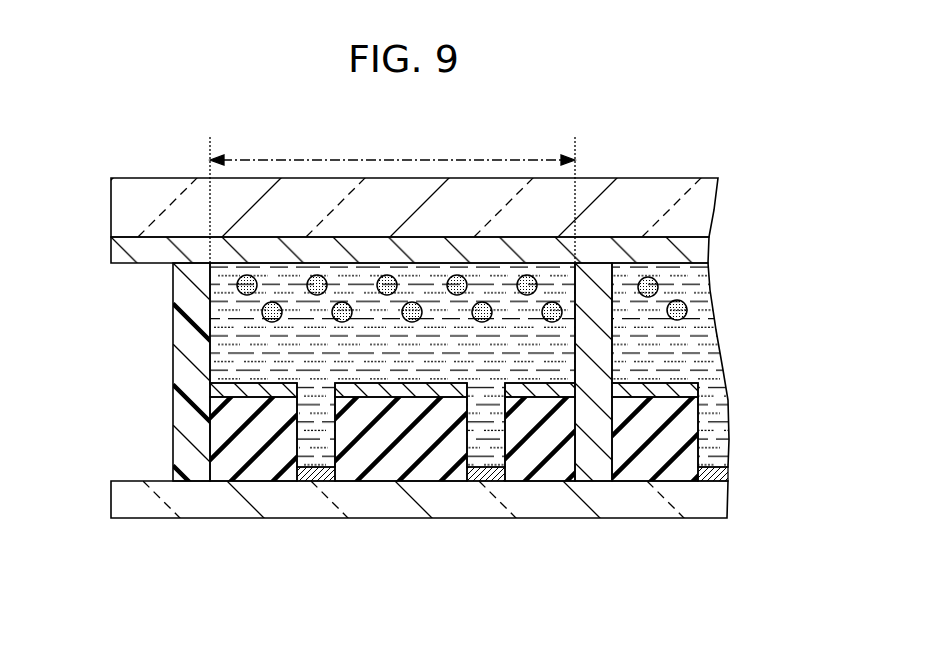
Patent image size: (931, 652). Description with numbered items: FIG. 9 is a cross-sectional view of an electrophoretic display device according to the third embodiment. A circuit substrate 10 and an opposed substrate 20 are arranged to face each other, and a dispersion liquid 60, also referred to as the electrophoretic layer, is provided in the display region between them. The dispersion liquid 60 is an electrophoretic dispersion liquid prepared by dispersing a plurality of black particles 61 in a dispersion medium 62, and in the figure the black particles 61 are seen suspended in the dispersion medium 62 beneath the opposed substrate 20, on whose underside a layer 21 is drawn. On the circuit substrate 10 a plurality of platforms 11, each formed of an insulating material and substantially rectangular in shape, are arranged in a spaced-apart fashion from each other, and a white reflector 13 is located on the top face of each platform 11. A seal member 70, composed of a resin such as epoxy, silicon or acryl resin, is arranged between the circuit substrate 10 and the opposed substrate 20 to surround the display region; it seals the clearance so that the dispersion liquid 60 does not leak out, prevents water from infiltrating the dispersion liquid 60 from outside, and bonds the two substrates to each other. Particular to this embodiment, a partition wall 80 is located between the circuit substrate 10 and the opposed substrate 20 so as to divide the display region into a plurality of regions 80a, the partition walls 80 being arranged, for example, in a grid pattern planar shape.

The circuit substrate 10 is at (123, 502).
The platform 11 is at (218, 438).
The white reflector 13 is at (212, 384).
The opposed substrate 20 is at (118, 200).
The opposite electrode 21 is at (118, 256).
The dispersion liquid 60 is at (514, 365).
The black particles 61 is at (688, 310).
The dispersion medium 62 is at (700, 338).
The seal member 70 is at (178, 330).
The partition wall 80 is at (597, 472).
The region 80a is at (392, 199).